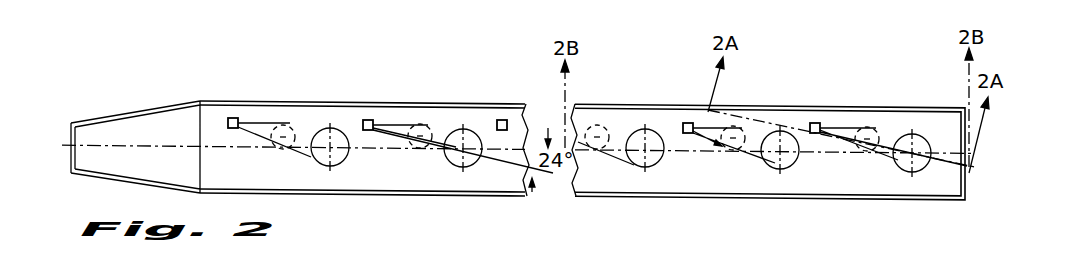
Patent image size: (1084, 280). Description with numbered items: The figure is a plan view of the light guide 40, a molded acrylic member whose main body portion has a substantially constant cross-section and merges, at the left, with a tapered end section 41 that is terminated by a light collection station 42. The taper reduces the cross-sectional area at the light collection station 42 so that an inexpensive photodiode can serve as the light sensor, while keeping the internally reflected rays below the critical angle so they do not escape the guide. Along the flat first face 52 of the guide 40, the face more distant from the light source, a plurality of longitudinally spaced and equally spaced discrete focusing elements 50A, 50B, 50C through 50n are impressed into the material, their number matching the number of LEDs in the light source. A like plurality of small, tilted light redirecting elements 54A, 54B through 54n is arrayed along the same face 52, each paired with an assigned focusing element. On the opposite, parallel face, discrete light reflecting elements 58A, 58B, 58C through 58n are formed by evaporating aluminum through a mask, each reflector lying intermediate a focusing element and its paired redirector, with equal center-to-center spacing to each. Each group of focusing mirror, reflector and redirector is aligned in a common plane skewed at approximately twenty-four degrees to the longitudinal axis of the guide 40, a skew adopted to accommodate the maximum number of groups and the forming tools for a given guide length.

The light guide 40 is at (947, 200).
The tapered end section 41 is at (140, 109).
The light collection station 42 is at (71, 122).
The focusing element 50n is at (328, 128).
The focusing element 50A is at (925, 135).
The focusing element 50B is at (793, 170).
The focusing element 50C is at (657, 167).
The first side (face) of guide 52 is at (690, 178).
The light redirecting element 54n is at (230, 119).
The light redirecting element 54A is at (811, 123).
The light redirecting element 54B is at (684, 123).
The light reflecting element 58n is at (280, 126).
The light reflecting element 58A is at (862, 128).
The light reflecting element 58B is at (745, 152).
The light reflecting element 58C is at (596, 150).